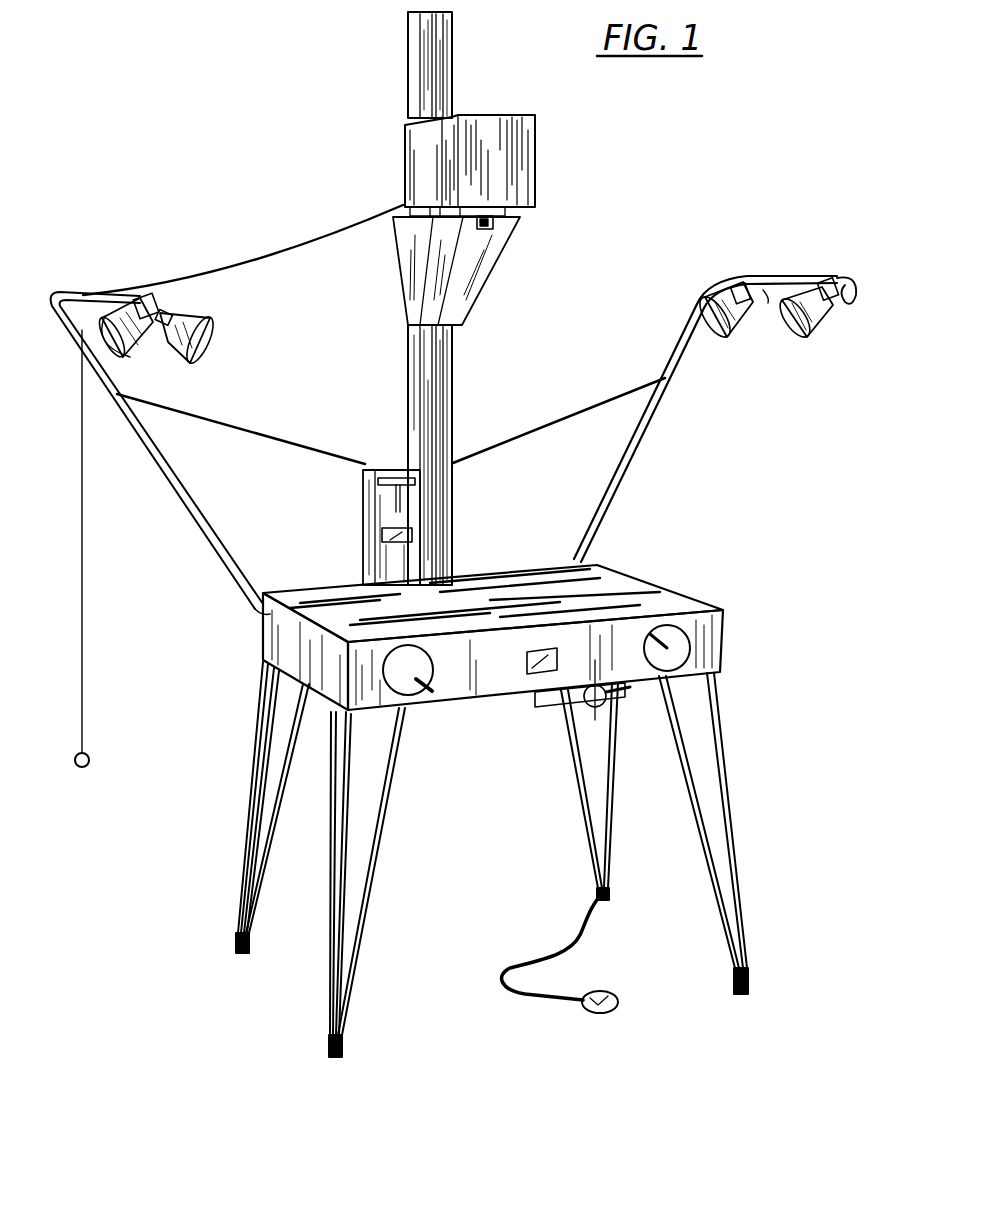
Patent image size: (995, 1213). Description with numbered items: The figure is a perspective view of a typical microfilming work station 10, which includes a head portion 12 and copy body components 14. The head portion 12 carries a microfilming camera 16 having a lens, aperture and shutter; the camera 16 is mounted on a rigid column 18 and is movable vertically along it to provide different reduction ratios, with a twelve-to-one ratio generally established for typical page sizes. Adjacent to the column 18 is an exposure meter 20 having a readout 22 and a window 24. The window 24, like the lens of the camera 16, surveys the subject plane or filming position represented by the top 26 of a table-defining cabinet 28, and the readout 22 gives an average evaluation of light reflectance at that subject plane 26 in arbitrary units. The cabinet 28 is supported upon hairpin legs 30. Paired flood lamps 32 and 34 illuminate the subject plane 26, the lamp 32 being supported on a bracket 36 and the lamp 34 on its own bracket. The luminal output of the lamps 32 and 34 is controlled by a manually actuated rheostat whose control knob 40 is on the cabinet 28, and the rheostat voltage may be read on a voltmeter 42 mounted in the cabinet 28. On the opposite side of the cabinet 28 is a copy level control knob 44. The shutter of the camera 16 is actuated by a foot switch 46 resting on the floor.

The microfilming work station 10 is at (642, 230).
The head portion 12 is at (290, 229).
The copy body components 14 is at (752, 611).
The microfilming camera 16 is at (494, 226).
The rigid column 18 is at (453, 398).
The exposure meter 20 is at (364, 488).
The readout 22 is at (382, 536).
The window 24 is at (392, 470).
The table top 26 is at (497, 585).
The cabinet 28 is at (268, 643).
The hairpin legs 30 is at (256, 778).
The flood lamp 32 is at (133, 358).
The flood lamp 34 is at (727, 337).
The bracket 36 is at (183, 490).
The rheostat control knob 40 is at (670, 630).
The voltmeter 42 is at (531, 675).
The copy level control knob 44 is at (410, 695).
The foot switch 46 is at (607, 993).